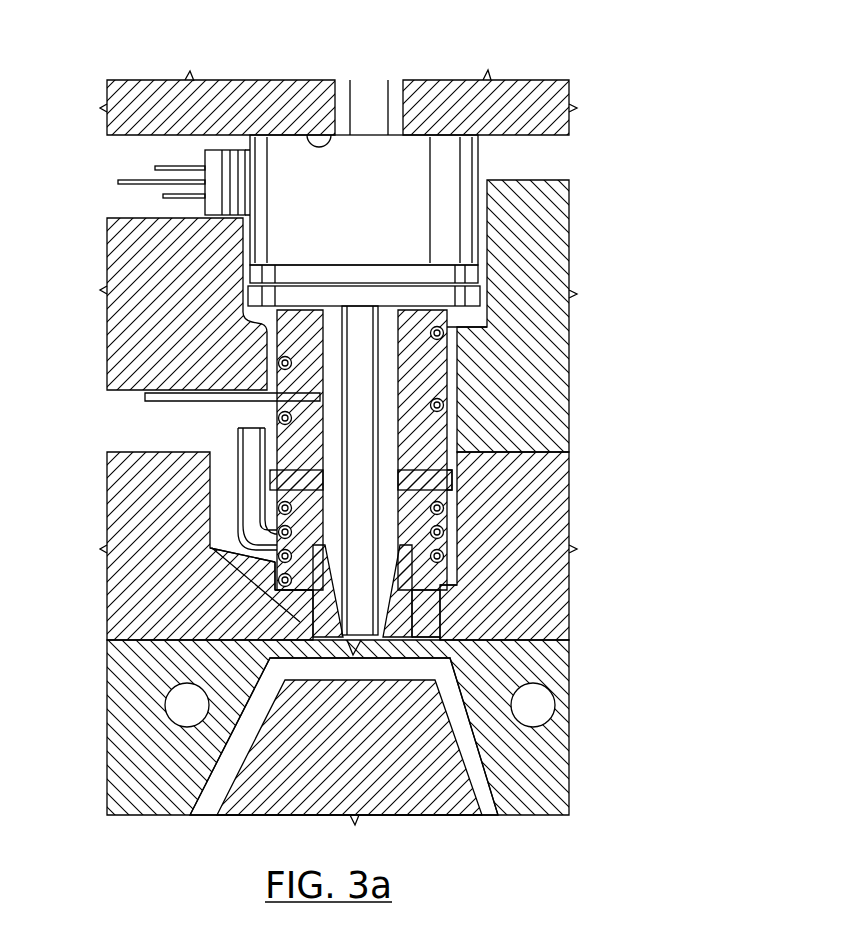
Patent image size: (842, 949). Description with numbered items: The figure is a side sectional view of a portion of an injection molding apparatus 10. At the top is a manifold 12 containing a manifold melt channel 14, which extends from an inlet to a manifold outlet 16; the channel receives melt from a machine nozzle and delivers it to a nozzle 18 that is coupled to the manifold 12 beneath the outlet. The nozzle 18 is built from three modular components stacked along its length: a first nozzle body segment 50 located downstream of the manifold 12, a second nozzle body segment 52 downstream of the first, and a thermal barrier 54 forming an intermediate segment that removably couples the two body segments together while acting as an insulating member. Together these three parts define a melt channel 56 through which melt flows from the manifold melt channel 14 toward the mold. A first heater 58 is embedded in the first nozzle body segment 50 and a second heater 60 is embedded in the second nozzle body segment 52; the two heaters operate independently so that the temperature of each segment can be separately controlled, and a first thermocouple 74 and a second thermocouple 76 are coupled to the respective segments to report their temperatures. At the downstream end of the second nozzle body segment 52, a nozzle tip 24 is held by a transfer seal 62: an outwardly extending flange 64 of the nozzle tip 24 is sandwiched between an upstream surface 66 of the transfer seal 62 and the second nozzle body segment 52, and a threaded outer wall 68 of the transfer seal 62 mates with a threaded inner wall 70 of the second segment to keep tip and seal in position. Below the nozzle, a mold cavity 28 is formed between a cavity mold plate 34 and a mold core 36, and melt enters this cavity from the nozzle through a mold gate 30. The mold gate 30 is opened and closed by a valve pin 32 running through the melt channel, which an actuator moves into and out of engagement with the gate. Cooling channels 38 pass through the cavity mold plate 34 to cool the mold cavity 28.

The injection molding apparatus 10 is at (664, 182).
The manifold 12 is at (545, 80).
The manifold melt channel 14 is at (398, 92).
The manifold outlet 16 is at (319, 150).
The nozzle 18 is at (296, 446).
The nozzle tip 24 is at (455, 620).
The mold cavity 28 is at (495, 775).
The mold gate 30 is at (354, 641).
The valve pin 32 is at (297, 620).
The cavity mold plate 34 is at (140, 696).
The mold core 36 is at (468, 790).
The cooling channels 38 is at (170, 707).
The first nozzle body segment 50 is at (440, 346).
The second nozzle body segment 52 is at (443, 557).
The thermal barrier 54 is at (443, 481).
The melt channel 56 is at (392, 410).
The first heater 58 is at (279, 362).
The second heater 60 is at (280, 506).
The transfer seal 62 is at (442, 632).
The outwardly extending flange 64 is at (443, 508).
The upstream surface 66 is at (446, 570).
The threaded outer wall 68 is at (288, 562).
The threaded inner wall 70 is at (280, 578).
The first thermocouple 74 is at (150, 398).
The second thermocouple 76 is at (268, 545).